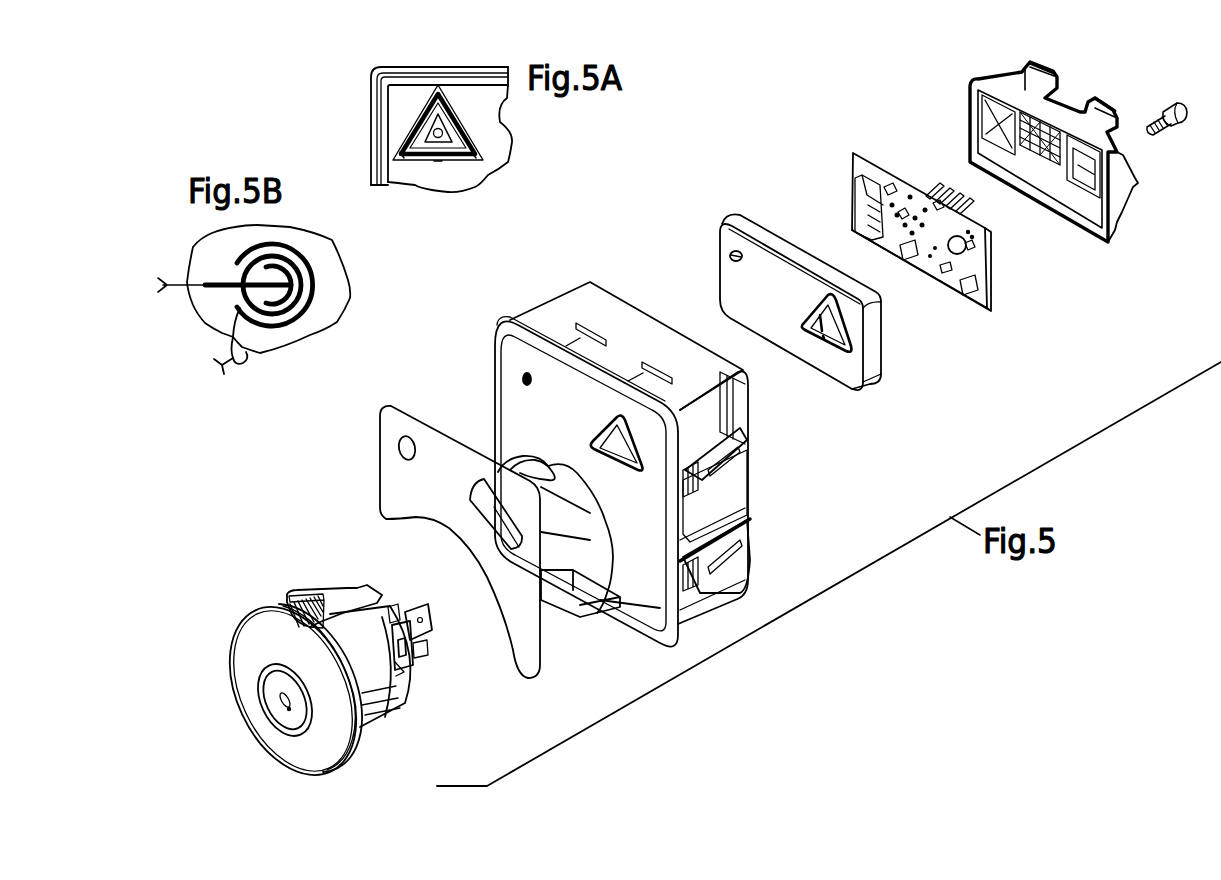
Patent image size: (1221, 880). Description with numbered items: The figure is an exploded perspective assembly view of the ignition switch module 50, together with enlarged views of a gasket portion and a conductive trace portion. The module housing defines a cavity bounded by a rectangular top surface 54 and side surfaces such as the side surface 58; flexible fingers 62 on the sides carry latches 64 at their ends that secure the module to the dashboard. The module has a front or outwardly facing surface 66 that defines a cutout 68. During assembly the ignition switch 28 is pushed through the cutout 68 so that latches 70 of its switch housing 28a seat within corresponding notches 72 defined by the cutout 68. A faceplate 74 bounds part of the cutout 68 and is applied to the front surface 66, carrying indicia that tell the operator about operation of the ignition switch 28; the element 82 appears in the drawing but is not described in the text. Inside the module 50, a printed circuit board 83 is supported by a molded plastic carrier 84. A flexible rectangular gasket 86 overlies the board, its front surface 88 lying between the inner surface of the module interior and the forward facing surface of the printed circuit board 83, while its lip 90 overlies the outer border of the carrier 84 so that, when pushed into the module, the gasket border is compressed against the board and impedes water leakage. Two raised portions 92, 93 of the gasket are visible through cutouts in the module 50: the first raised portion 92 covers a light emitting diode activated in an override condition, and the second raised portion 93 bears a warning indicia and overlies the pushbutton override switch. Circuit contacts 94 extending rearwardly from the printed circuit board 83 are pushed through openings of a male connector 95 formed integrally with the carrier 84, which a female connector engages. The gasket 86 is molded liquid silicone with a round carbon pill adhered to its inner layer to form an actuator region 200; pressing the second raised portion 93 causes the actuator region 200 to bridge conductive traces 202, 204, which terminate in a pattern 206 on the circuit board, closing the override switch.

In FIG. 5, the ignition switch 28 is at (345, 661).
In FIG. 5, the switch housing 28a is at (400, 705).
In FIG. 5, the ignition switch module 50 is at (654, 458).
In FIG. 5, the rectangular top surface 54 is at (630, 332).
In FIG. 5, the side surface 58 is at (733, 502).
In FIG. 5, the flexible fingers 62 is at (713, 475).
In FIG. 5, the latches 64 is at (692, 490).
In FIG. 5, the front surface 66 is at (643, 573).
In FIG. 5, the cutout 68 is at (593, 593).
In FIG. 5, the latches 70 is at (334, 598).
In FIG. 5, the notches 72 is at (555, 473).
In FIG. 5, the faceplate 74 is at (395, 473).
In FIG. 5, the terminal 82 is at (420, 648).
In FIG. 5, the printed circuit board 83 is at (952, 219).
In FIG. 5, the molded plastic carrier 84 is at (1078, 160).
In FIG. 5A, the gasket 86 is at (508, 167).
In FIG. 5, the gasket 86 is at (797, 296).
In FIG. 5, the front surface 88 is at (825, 357).
In FIG. 5A, the lip 90 is at (453, 67).
In FIG. 5, the lip 90 is at (805, 257).
In FIG. 5, the first raised portion 92 is at (730, 254).
In FIG. 5, the second raised portion 93 is at (845, 327).
In FIG. 5, the circuit contacts 94 is at (947, 185).
In FIG. 5, the male connector 95 is at (1032, 182).
In FIG. 5A, the actuator region 200 is at (444, 130).
In FIG. 5B, the conductive trace 202 is at (165, 283).
In FIG. 5B, the conductive trace 204 is at (253, 381).
In FIG. 5B, the pattern 206 is at (333, 327).